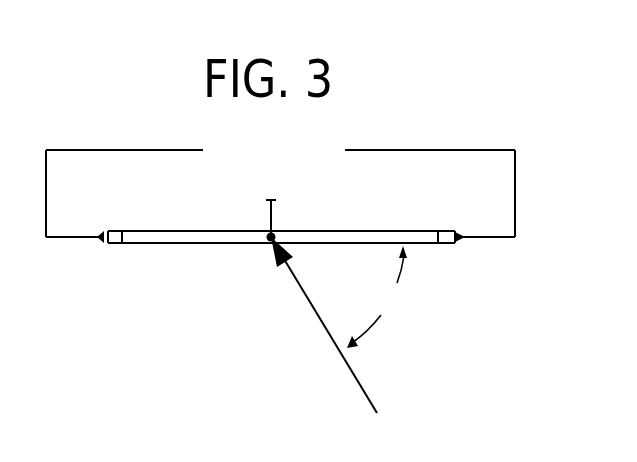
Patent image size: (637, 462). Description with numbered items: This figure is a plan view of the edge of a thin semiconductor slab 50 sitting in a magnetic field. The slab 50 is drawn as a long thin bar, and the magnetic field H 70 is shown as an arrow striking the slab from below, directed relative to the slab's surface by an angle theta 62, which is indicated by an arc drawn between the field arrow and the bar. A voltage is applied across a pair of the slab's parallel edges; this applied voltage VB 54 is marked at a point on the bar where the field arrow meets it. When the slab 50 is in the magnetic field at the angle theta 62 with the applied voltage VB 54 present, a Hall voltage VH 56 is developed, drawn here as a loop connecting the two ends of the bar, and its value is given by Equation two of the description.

The semiconductor slab 50 is at (397, 226).
The applied voltage VB 54 is at (278, 199).
The Hall voltage VH 56 is at (318, 128).
The angle θ 62 is at (388, 300).
The vector H 70 is at (428, 409).